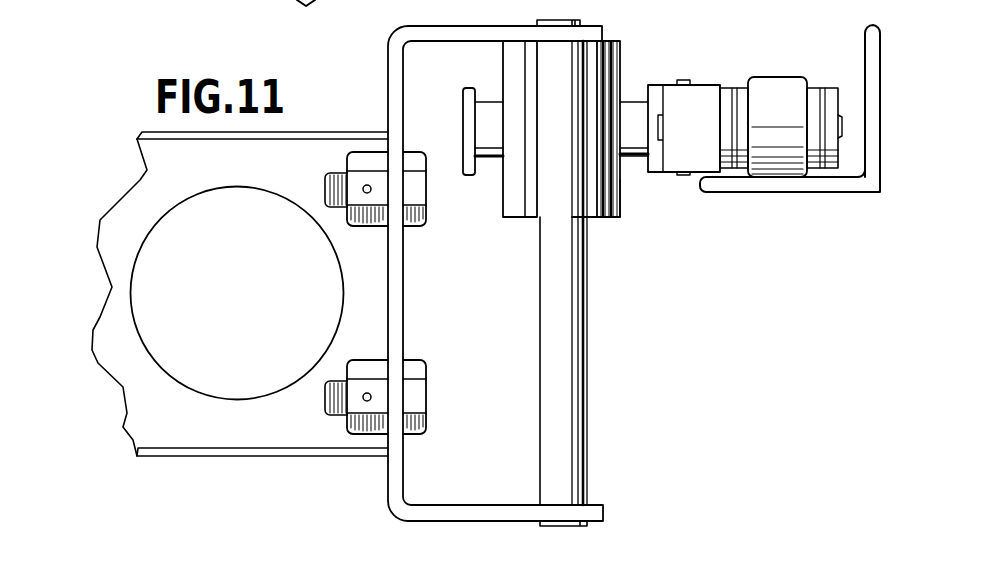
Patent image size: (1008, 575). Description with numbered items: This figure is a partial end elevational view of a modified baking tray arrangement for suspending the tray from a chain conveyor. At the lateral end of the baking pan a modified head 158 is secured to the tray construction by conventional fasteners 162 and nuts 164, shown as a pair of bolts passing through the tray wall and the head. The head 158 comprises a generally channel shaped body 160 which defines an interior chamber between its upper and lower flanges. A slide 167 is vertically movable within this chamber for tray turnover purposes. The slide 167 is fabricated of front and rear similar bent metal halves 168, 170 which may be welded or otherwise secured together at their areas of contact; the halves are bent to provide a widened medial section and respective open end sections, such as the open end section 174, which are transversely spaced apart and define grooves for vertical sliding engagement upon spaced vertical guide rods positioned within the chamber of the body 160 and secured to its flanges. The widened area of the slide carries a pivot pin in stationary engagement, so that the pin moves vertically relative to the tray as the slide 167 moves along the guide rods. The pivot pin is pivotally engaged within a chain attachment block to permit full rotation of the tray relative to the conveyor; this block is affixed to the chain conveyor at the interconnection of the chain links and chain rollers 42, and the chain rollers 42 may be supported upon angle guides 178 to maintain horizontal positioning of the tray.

The nuts 164 is at (355, 505).
The fasteners 162 is at (326, 188).
The rear bent metal half 170 is at (501, 58).
The front bent metal half 168 is at (620, 68).
The open end section 174 is at (590, 218).
The slide 167 is at (622, 205).
The channel shaped body 160 is at (508, 20).
The modified head 158 is at (604, 513).
The chain rollers 42 is at (770, 77).
The angle guides 178 is at (803, 193).